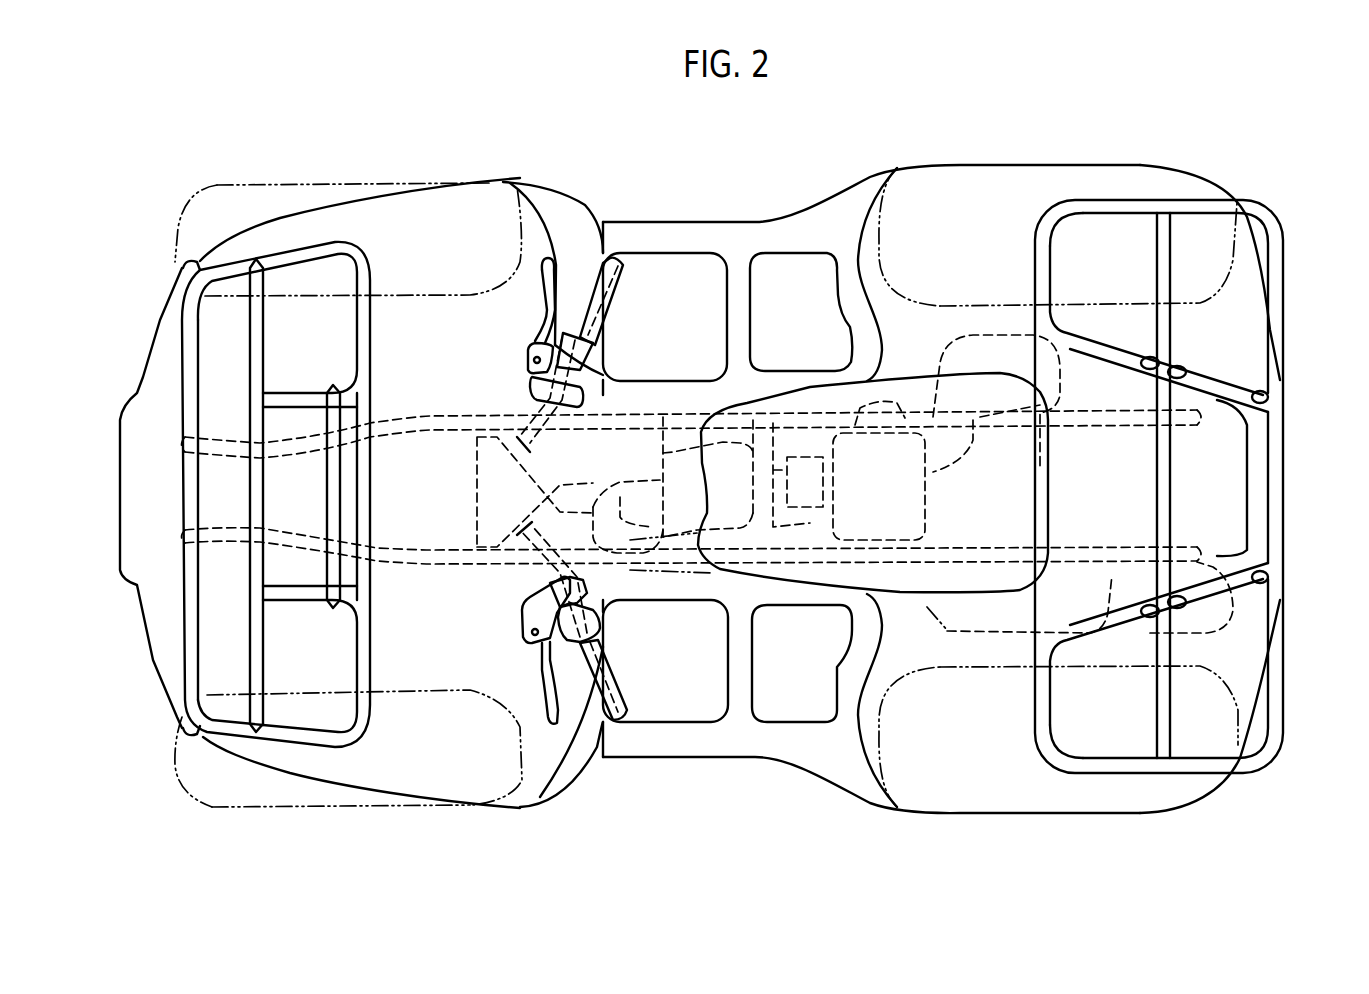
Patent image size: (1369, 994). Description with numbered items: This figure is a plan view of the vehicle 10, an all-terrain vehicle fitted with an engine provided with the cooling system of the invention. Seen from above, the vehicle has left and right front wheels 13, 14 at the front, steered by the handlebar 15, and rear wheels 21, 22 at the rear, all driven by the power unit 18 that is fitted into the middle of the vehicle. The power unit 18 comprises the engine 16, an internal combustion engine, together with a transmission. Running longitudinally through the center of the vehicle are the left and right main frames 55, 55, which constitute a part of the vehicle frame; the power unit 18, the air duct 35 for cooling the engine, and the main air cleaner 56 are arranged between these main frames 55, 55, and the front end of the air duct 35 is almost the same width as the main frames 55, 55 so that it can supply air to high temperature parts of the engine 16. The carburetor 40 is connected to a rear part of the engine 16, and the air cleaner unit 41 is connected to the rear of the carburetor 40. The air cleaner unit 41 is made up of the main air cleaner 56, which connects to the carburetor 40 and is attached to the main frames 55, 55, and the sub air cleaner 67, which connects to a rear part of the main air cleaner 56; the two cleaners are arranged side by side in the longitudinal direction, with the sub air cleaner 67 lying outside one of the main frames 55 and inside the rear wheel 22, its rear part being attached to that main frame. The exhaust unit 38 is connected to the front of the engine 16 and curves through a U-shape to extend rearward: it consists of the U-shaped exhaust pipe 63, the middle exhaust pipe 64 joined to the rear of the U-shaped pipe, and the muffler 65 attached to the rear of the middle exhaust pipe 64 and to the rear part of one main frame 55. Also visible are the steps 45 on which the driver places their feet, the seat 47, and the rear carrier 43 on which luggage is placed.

The vehicle 10 is at (178, 148).
The front wheel 13 is at (256, 810).
The front wheel 14 is at (268, 183).
The handlebar 15 is at (577, 745).
The engine 16 is at (735, 450).
The power unit 18 is at (663, 450).
The rear wheel 21 is at (1180, 668).
The rear wheel 22 is at (1225, 287).
The air duct 35 is at (477, 500).
The exhaust unit 38 is at (632, 576).
The carburetor 40 is at (805, 455).
The air cleaner unit 41 is at (921, 510).
The rear carrier 43 is at (1135, 200).
The step 45 is at (681, 285).
The seat 47 is at (1052, 485).
The main frame 55 is at (408, 416).
The main air cleaner 56 is at (921, 512).
The U-shaped exhaust pipe 63 is at (645, 475).
The middle exhaust pipe 64 is at (713, 567).
The muffler 65 is at (1017, 637).
The sub air cleaner 67 is at (992, 333).